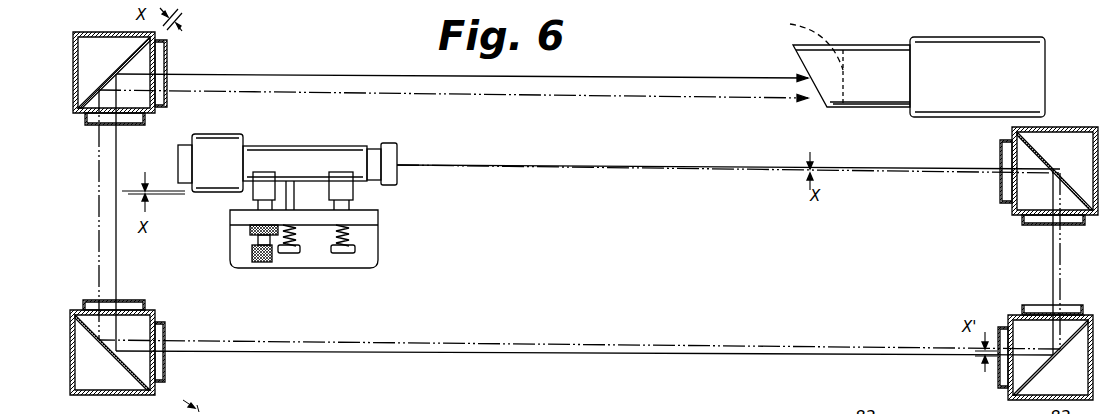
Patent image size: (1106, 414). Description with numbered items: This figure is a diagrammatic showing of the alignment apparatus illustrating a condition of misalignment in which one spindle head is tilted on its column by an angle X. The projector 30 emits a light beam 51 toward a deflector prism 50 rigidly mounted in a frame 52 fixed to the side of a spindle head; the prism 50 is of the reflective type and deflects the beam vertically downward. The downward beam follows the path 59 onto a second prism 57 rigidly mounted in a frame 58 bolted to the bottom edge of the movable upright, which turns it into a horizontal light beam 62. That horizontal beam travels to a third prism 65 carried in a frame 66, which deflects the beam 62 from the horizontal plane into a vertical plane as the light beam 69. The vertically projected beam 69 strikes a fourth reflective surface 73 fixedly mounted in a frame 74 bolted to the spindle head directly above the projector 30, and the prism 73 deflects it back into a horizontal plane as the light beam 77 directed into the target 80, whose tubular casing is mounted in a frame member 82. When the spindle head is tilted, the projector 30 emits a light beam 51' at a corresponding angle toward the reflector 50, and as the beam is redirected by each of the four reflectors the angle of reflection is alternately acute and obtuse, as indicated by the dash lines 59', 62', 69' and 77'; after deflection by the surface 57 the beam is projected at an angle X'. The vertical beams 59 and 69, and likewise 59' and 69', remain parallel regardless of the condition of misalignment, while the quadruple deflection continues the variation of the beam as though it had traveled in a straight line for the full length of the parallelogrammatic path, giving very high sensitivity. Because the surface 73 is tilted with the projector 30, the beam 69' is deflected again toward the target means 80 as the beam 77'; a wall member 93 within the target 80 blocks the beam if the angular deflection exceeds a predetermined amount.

The projector 30 is at (286, 136).
The deflector prism 50 is at (1000, 154).
The light beam 51 is at (728, 152).
The light beam 51' is at (728, 191).
The frame 52 is at (1065, 128).
The second prism 57 is at (1000, 382).
The frame 58 is at (1011, 314).
The light beam path 59 is at (1026, 262).
The light beam 59' is at (1078, 261).
The light beam 62 is at (584, 368).
The light beam 62' is at (579, 331).
The prism 65 is at (140, 370).
The frame 66 is at (70, 374).
The light beam 69 is at (135, 212).
The light beam 69' is at (72, 215).
The reflective surface 73 is at (140, 60).
The frame 74 is at (86, 33).
The light beam 77 is at (462, 61).
The light beam 77' is at (453, 106).
The target 80 is at (1006, 62).
The frame member 82 is at (866, 58).
The wall member 93 is at (802, 40).